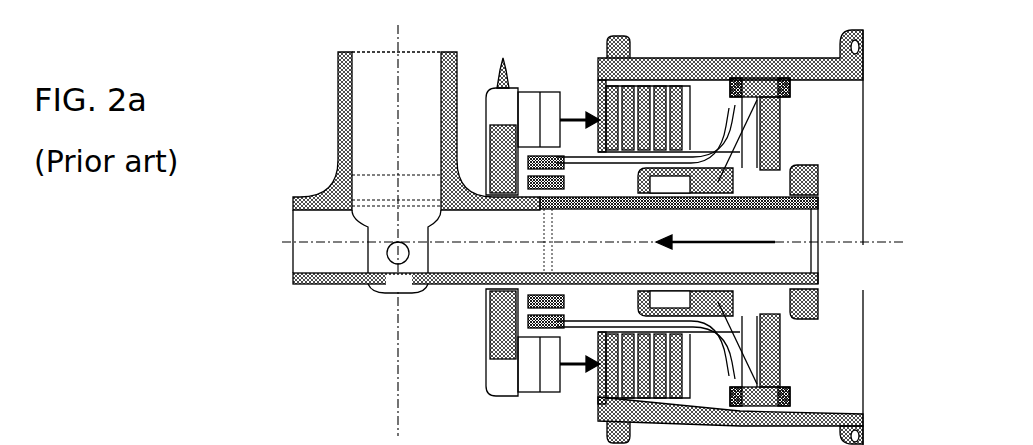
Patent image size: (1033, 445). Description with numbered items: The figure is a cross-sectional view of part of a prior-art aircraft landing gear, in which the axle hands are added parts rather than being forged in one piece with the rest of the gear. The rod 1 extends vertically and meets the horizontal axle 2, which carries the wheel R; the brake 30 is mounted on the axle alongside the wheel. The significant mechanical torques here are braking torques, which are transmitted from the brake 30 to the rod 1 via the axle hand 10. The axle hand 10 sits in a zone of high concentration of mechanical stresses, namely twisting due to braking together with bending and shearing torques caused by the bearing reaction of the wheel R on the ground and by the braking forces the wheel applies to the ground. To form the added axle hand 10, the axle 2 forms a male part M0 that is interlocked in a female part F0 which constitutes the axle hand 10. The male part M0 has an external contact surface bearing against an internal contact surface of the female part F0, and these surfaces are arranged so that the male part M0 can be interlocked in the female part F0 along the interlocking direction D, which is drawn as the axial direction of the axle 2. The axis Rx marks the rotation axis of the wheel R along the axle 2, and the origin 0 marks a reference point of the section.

The origin / reference point 0 is at (201, 231).
The rod 1 is at (338, 84).
The axle 2 is at (735, 262).
The axle hand 10 is at (494, 184).
The brake 30 is at (650, 130).
The wheel R is at (712, 50).
The interlocking direction D is at (743, 243).
The female part F0 is at (543, 180).
The male part M0 is at (510, 280).
The axis of rotation Rx is at (574, 225).